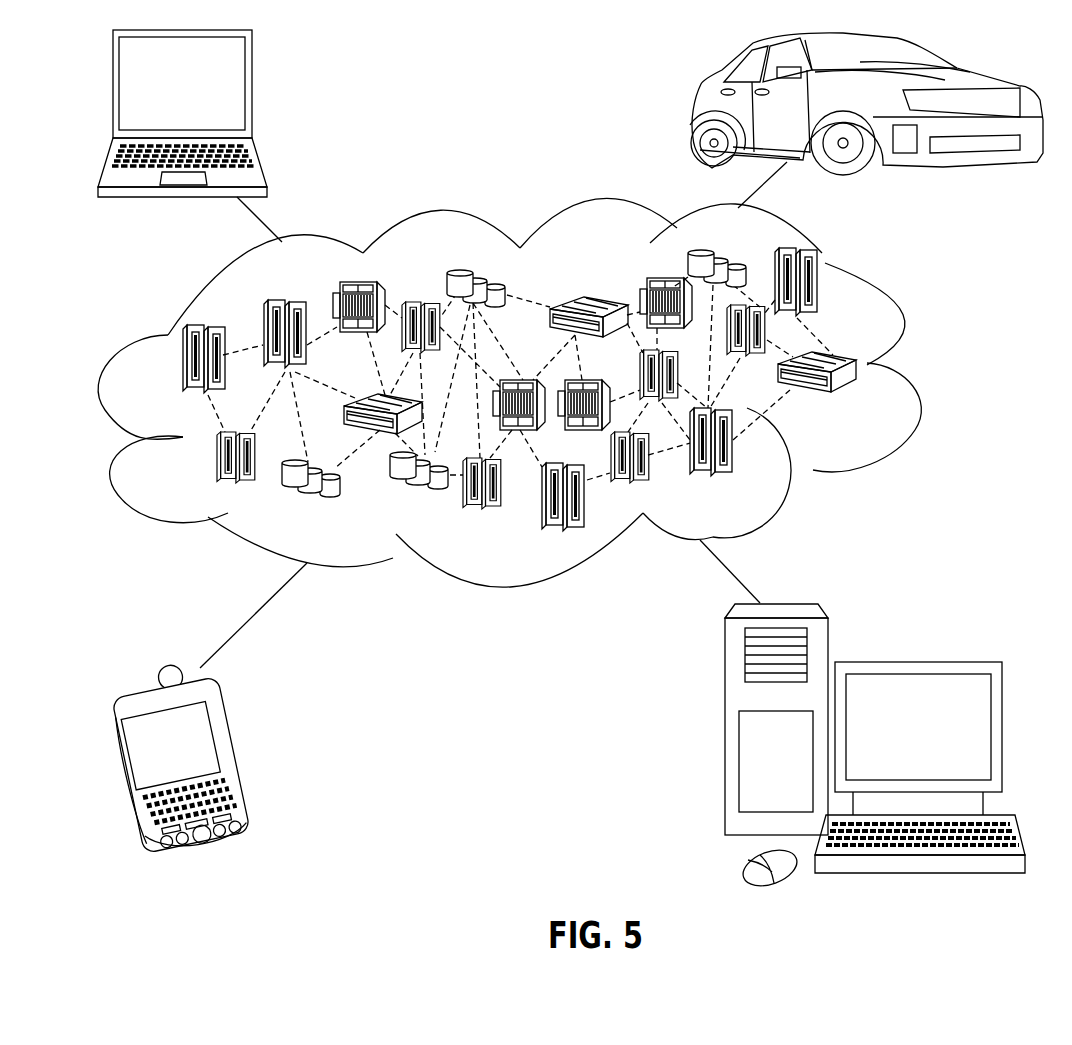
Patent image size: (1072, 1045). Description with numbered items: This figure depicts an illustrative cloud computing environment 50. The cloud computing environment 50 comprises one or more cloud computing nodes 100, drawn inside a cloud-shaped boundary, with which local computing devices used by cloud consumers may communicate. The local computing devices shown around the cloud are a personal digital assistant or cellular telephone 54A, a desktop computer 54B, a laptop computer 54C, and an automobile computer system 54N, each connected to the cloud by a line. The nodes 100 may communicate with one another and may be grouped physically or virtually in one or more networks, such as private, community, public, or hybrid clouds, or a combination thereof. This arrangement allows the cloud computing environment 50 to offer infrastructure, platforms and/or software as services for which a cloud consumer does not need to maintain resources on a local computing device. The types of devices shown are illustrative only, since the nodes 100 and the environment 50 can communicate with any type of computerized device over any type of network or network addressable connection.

The cloud computing environment 50 is at (913, 372).
The cloud computing nodes 100 is at (582, 389).
The personal digital assistant or cellular telephone 54A is at (240, 755).
The desktop computer 54B is at (916, 660).
The laptop computer 54C is at (252, 92).
The automobile computer system 54N is at (693, 107).